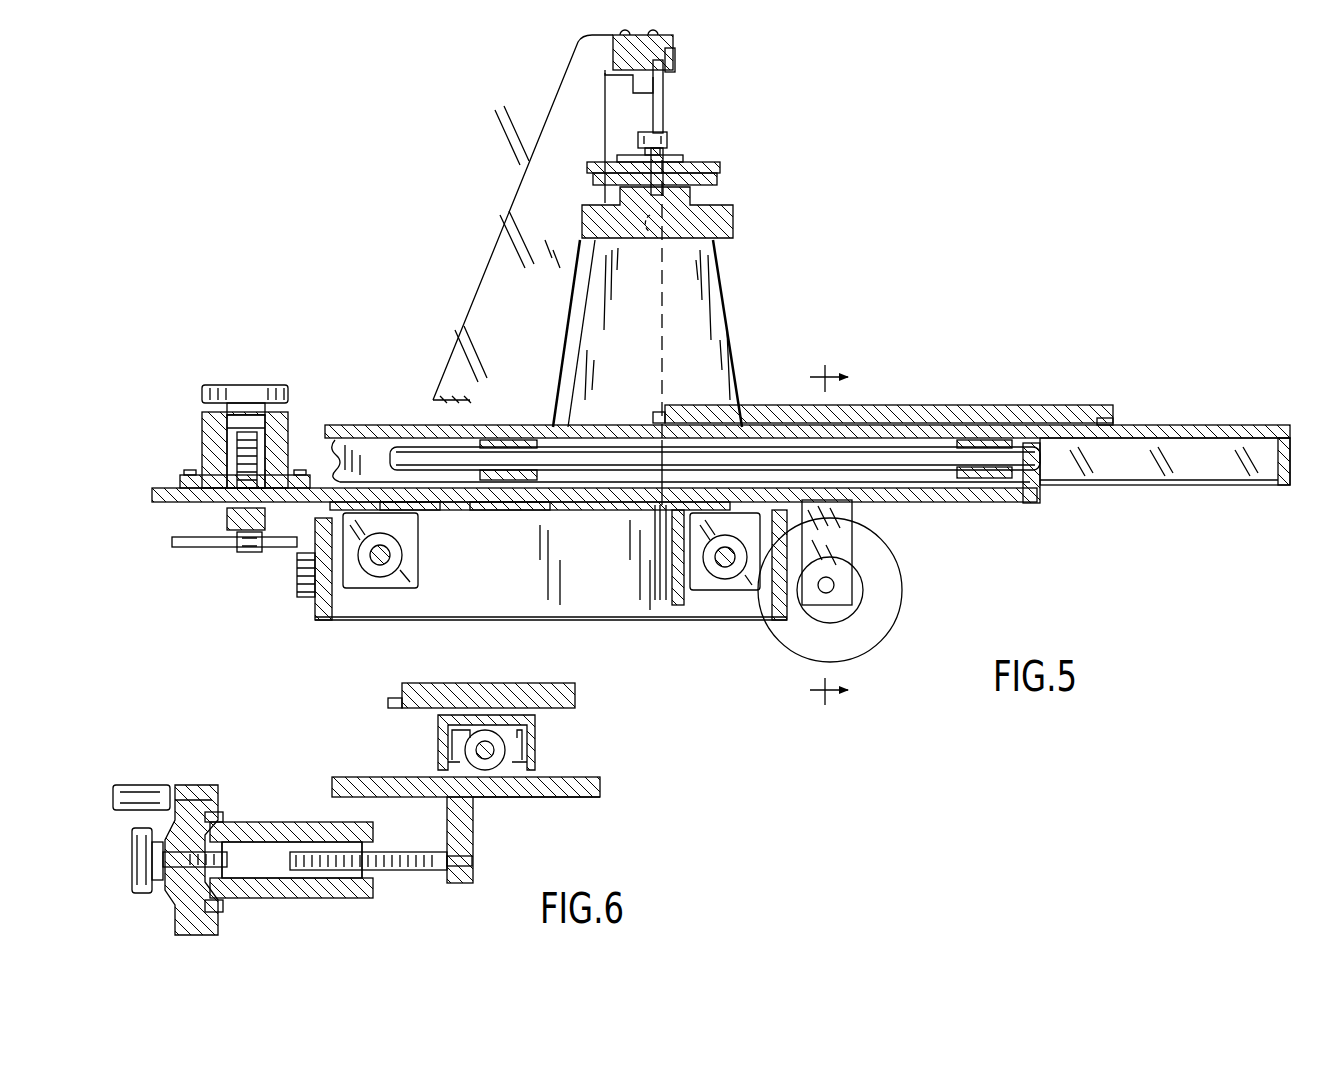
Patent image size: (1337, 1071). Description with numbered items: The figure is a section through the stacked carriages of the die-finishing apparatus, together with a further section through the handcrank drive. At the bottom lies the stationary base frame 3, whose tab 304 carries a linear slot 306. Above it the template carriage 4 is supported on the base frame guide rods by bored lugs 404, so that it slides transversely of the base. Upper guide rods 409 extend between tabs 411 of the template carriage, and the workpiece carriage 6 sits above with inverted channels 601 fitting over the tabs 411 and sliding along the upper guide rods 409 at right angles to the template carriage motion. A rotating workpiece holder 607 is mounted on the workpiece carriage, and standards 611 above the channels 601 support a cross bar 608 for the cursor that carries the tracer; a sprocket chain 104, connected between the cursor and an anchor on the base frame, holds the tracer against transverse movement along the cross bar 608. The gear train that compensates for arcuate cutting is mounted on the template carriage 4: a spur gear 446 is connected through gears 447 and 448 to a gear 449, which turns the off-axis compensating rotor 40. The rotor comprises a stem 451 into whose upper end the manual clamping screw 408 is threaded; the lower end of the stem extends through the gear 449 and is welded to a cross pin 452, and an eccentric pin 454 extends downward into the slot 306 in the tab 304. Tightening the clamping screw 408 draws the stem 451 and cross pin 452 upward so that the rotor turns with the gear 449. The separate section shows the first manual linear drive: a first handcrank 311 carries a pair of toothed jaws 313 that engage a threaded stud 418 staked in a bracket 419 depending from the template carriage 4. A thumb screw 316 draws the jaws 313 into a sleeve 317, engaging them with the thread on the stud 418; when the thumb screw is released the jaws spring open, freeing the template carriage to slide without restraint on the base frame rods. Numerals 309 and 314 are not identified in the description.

In FIG. 5, the base frame 3 is at (398, 624).
In FIG. 6, the template carriage 4 is at (451, 809).
In FIG. 5, the workpiece carriage 6 is at (1160, 396).
In FIG. 5, the compensating rotor 40 is at (201, 474).
In FIG. 5, the sprocket chain 104 is at (658, 340).
In FIG. 5, the tab 304 is at (172, 542).
In FIG. 5, the linear slot 306 is at (193, 552).
In FIG. 5, the pivot pin 309 is at (382, 565).
In FIG. 6, the first handcrank 311 is at (190, 790).
In FIG. 6, the toothed jaws 313 is at (375, 840).
In FIG. 6, the inner tube 314 is at (258, 898).
In FIG. 6, the thumb screw 316 is at (132, 862).
In FIG. 6, the sleeve 317 is at (235, 832).
In FIG. 5, the lugs 404 is at (417, 571).
In FIG. 5, the manual clamping screw 408 is at (262, 389).
In FIG. 5, the upper guide rods 409 is at (940, 455).
In FIG. 6, the upper guide rods 409 is at (475, 752).
In FIG. 5, the tabs 411 is at (1030, 490).
In FIG. 6, the tabs 411 is at (502, 780).
In FIG. 6, the threaded stud 418 is at (418, 878).
In FIG. 6, the bracket 419 is at (474, 832).
In FIG. 5, the spur gear 446 is at (620, 505).
In FIG. 5, the gear 447 is at (536, 505).
In FIG. 5, the gear 448 is at (436, 505).
In FIG. 5, the gear 449 is at (160, 506).
In FIG. 5, the stem 451 is at (230, 460).
In FIG. 5, the cross pin 452 is at (258, 546).
In FIG. 5, the eccentric pin 454 is at (243, 553).
In FIG. 5, the inverted channels 601 is at (1175, 425).
In FIG. 6, the inverted channels 601 is at (537, 750).
In FIG. 5, the rotating workpiece holder 607 is at (970, 405).
In FIG. 6, the rotating workpiece holder 607 is at (457, 693).
In FIG. 5, the cross bar 608 is at (678, 60).
In FIG. 5, the standards 611 is at (533, 318).